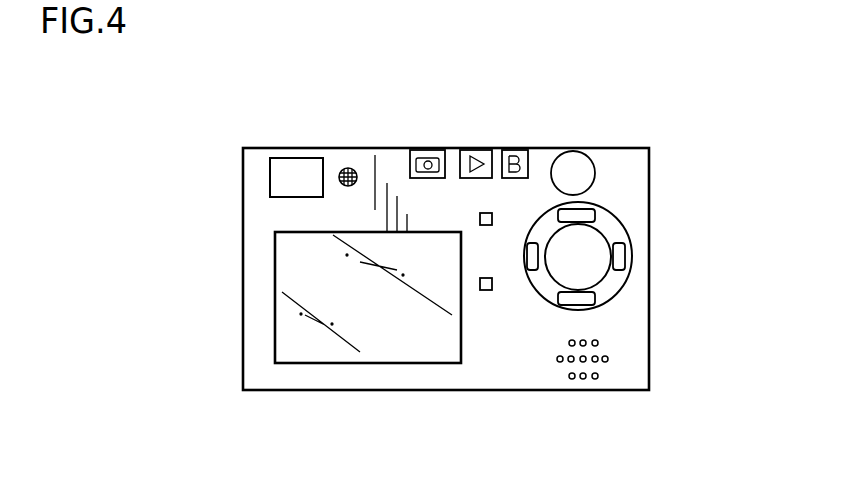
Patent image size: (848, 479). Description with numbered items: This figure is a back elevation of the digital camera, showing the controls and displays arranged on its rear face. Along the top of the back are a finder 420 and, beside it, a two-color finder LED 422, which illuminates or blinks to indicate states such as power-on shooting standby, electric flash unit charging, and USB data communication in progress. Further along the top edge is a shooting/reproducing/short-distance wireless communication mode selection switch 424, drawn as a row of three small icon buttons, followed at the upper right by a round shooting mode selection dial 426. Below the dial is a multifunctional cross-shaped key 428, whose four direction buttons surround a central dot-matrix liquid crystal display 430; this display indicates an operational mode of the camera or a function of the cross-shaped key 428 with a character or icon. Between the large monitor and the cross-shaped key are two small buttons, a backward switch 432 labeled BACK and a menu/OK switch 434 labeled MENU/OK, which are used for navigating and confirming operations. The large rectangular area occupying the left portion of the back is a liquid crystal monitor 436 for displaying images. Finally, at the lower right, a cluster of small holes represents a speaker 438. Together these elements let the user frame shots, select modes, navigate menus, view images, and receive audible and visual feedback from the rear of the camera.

The finder 420 is at (308, 158).
The finder LED 422 is at (363, 168).
The shooting/reproducing/short-distance wireless communication mode selection switch 424 is at (510, 148).
The shooting mode selection dial 426 is at (577, 163).
The multifunctional cross-shaped key 428 is at (622, 258).
The dot-matrix liquid crystal display 430 is at (567, 278).
The backward switch 432 is at (480, 222).
The menu/OK switch 434 is at (481, 288).
The liquid crystal monitor 436 is at (323, 348).
The speaker 438 is at (608, 350).